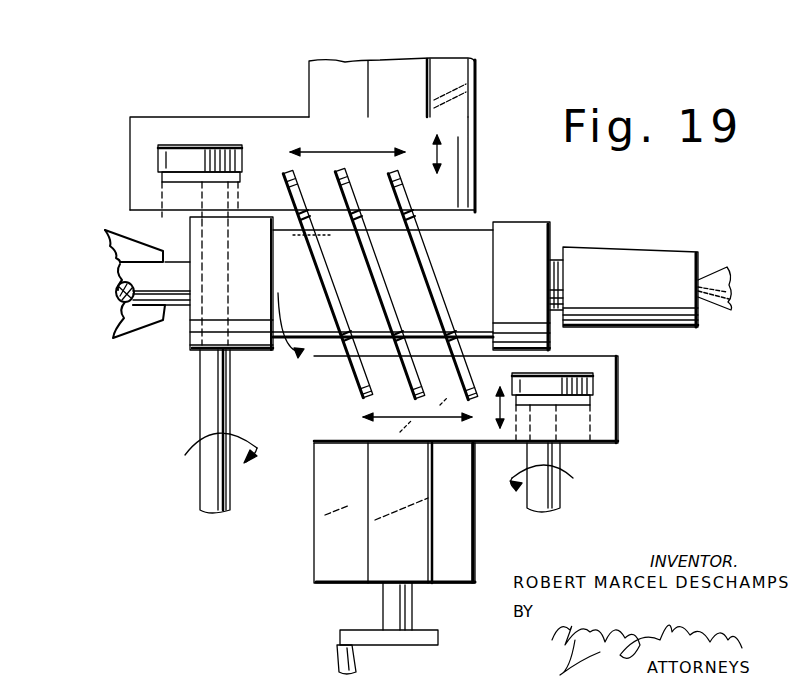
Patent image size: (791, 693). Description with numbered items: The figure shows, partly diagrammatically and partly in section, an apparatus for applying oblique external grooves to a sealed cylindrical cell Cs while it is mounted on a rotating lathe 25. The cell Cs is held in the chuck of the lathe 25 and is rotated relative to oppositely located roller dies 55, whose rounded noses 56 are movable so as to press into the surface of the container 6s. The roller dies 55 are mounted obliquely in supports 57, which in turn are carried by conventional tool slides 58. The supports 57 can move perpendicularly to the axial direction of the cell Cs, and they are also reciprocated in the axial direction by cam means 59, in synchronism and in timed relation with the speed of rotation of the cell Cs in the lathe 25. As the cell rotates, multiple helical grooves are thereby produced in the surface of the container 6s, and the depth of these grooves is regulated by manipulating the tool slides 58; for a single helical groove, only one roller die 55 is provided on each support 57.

The lathe 25 is at (125, 250).
The roller dies 55 is at (393, 181).
The rounded noses 56 is at (415, 211).
The supports 57 is at (458, 138).
The tool slides 58 is at (448, 70).
The cam means 59 is at (194, 165).
The container 6s is at (473, 228).
The cell Cs is at (476, 272).